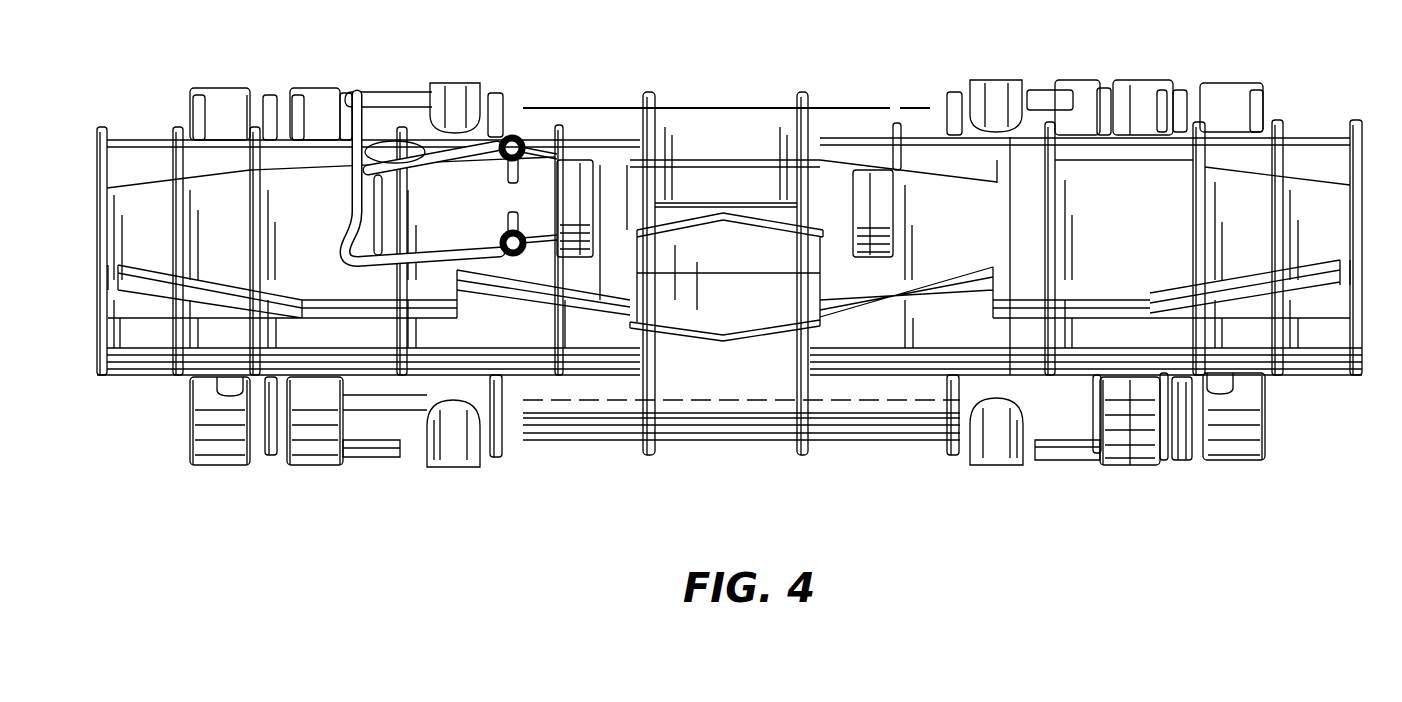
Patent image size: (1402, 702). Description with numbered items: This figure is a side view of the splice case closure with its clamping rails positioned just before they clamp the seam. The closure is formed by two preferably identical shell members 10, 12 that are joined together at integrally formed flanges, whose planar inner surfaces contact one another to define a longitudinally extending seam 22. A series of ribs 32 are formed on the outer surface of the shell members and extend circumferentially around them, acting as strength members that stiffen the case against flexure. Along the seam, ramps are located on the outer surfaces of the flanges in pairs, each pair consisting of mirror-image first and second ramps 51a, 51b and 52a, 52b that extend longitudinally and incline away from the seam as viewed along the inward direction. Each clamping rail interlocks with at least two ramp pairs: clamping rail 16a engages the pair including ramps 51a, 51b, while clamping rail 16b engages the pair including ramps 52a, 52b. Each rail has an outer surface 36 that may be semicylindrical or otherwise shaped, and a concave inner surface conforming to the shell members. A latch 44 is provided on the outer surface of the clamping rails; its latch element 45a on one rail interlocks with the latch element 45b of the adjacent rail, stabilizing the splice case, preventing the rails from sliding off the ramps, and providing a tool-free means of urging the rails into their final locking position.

The shell member 10 is at (726, 120).
The shell member 12 is at (731, 430).
The clamping rail 16a is at (137, 150).
The clamping rail 16b is at (1316, 140).
The longitudinally extending seam 22 is at (740, 273).
The rib 32 is at (962, 98).
The outer surface of clamping rail 36 is at (307, 193).
The latch 44 is at (347, 258).
The latch element 45a is at (597, 240).
The latch element 45b is at (893, 207).
The ramp 51a is at (685, 213).
The ramp 52a is at (767, 213).
The ramp 51b is at (697, 327).
The ramp 52b is at (768, 330).